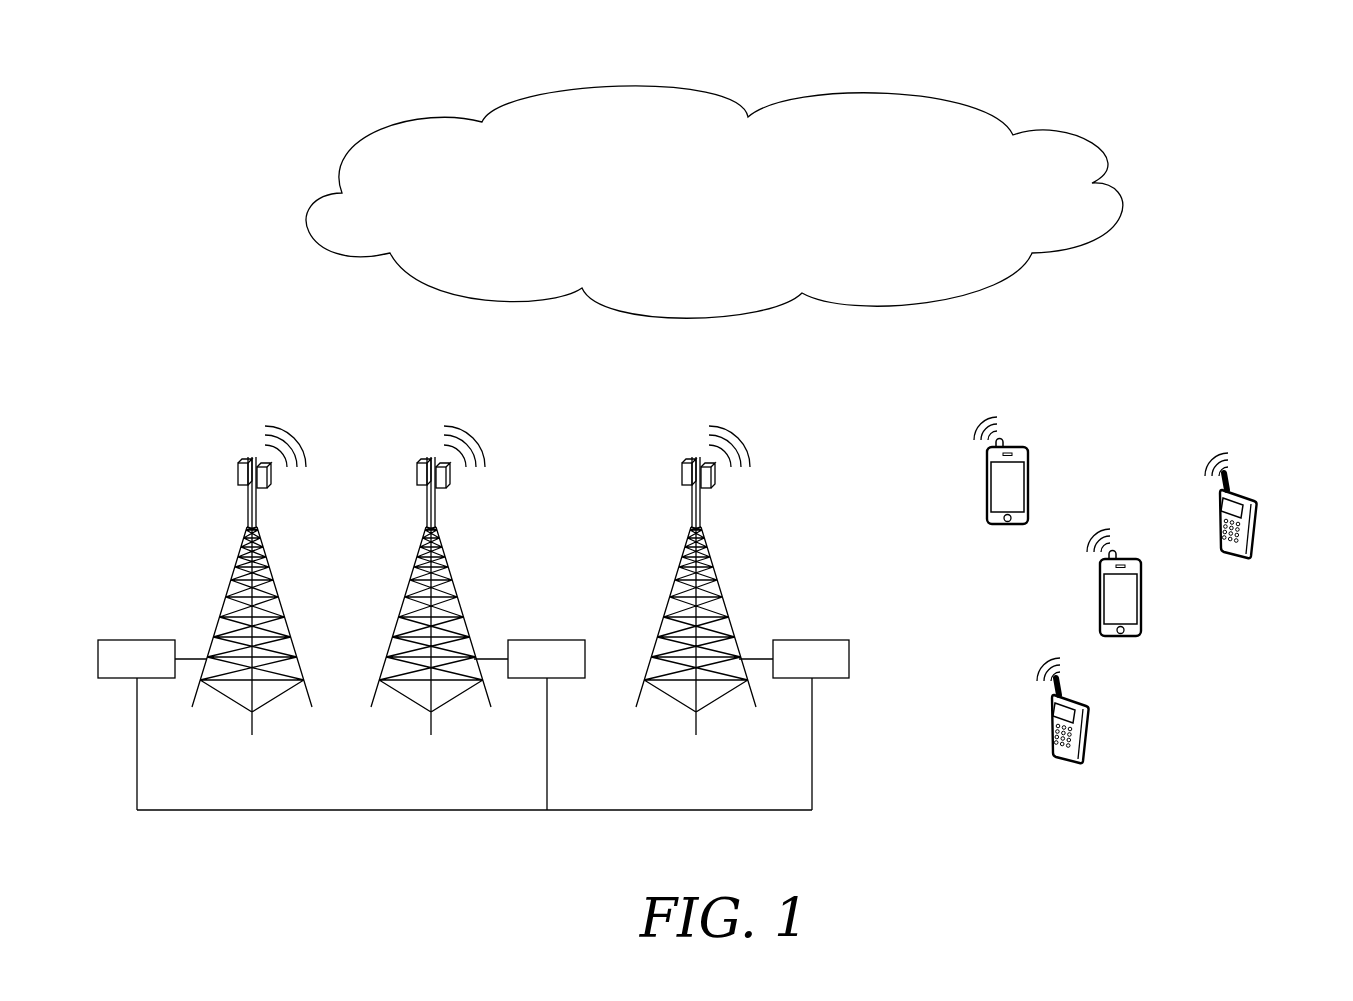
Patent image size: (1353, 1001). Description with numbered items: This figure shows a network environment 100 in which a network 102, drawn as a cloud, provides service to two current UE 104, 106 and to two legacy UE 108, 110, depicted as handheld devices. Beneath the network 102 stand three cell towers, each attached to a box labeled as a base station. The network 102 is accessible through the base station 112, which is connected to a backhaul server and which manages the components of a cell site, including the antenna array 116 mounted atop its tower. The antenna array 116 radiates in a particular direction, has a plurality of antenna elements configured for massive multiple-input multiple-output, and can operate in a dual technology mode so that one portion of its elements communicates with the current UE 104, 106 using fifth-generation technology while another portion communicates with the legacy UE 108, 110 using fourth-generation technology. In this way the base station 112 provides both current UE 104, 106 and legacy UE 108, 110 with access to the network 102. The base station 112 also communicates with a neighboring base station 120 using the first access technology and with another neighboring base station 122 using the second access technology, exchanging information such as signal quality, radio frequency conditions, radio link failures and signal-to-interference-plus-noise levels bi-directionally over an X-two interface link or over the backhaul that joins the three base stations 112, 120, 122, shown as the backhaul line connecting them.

The network environment 100 is at (113, 98).
The network 102 is at (737, 215).
The current UE 104 is at (1028, 485).
The current UE 106 is at (1140, 596).
The legacy UE 108 is at (1090, 727).
The legacy UE 110 is at (1258, 520).
The base station 112 is at (811, 640).
The antenna array 116 is at (711, 473).
The neighboring base station 120 is at (547, 640).
The neighboring base station 122 is at (140, 640).